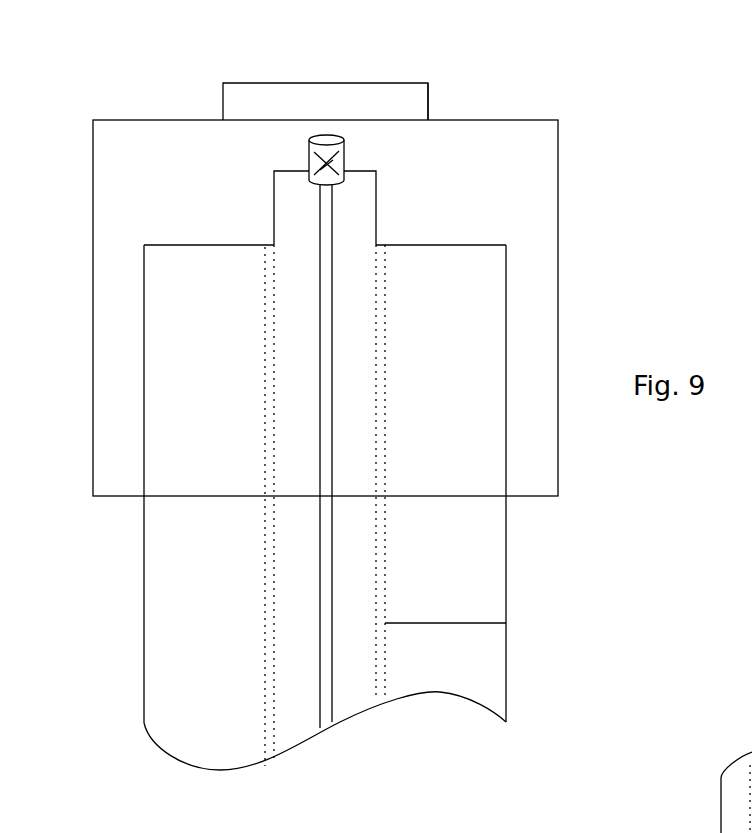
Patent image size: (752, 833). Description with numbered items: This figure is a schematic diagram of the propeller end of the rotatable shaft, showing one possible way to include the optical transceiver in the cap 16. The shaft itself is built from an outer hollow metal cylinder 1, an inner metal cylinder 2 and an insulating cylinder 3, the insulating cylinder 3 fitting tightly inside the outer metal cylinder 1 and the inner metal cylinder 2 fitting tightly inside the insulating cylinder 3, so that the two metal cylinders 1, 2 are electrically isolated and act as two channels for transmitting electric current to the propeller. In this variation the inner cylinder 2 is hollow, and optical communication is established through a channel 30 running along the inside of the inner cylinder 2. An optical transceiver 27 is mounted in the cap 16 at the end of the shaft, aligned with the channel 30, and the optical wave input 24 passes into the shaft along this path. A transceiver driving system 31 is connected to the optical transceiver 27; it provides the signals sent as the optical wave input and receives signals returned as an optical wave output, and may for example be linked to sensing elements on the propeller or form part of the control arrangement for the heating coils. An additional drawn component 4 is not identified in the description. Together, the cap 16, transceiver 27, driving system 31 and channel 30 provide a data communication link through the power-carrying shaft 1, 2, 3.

The outer metal cylinder 1 is at (157, 622).
The inner metal cylinder 2 is at (286, 183).
The insulating cylinder 3 is at (506, 620).
The sensor element 4 is at (326, 136).
The cap 16 is at (545, 133).
The optical wave input 24 is at (248, 256).
The optical transceiver 27 is at (347, 148).
The channel 30 is at (325, 720).
The transceiver driving system 31 is at (415, 97).